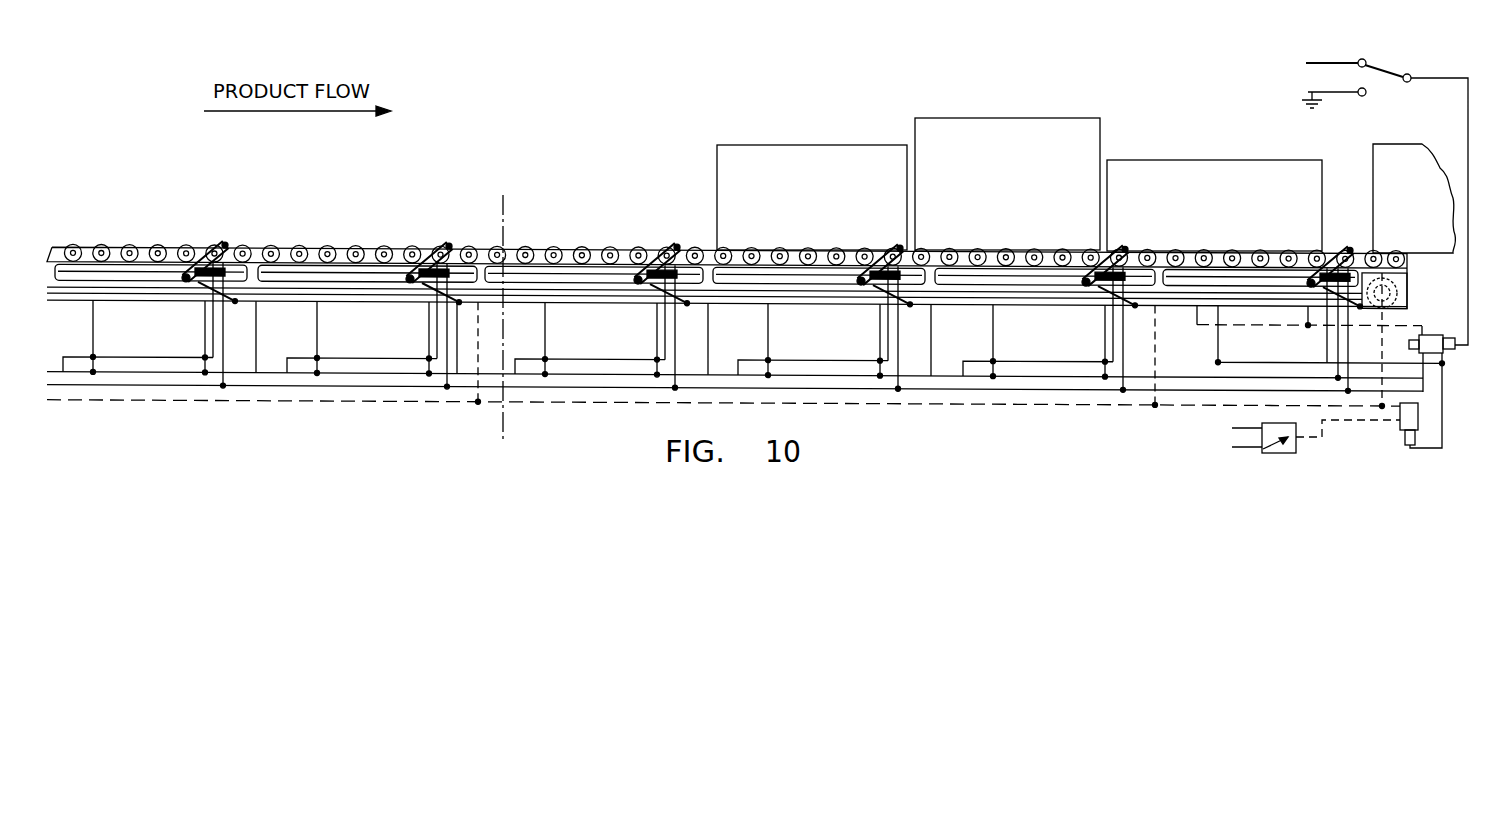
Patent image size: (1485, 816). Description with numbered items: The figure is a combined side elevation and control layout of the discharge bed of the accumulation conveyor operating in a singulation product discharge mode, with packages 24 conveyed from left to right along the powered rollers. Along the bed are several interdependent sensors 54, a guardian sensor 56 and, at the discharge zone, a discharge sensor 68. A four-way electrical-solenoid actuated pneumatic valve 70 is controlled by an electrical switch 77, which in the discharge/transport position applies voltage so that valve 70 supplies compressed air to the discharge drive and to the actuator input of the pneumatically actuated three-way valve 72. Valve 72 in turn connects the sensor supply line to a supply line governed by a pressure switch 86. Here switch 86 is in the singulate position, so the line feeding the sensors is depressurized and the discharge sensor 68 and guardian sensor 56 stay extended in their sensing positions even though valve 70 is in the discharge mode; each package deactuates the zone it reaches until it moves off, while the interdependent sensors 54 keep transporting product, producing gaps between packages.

The packages 24 is at (812, 145).
The interdependent sensor 54 is at (226, 246).
The guardian sensor 56 is at (449, 247).
The discharge sensor 68 is at (1351, 250).
The four-way electrical-solenoid actuated pneumatic valve 70 is at (1436, 334).
The pneumatically actuated three-way pneumatic valve 72 is at (1400, 426).
The electrical switch 77 is at (1388, 73).
The pressure switch 86 is at (1282, 453).